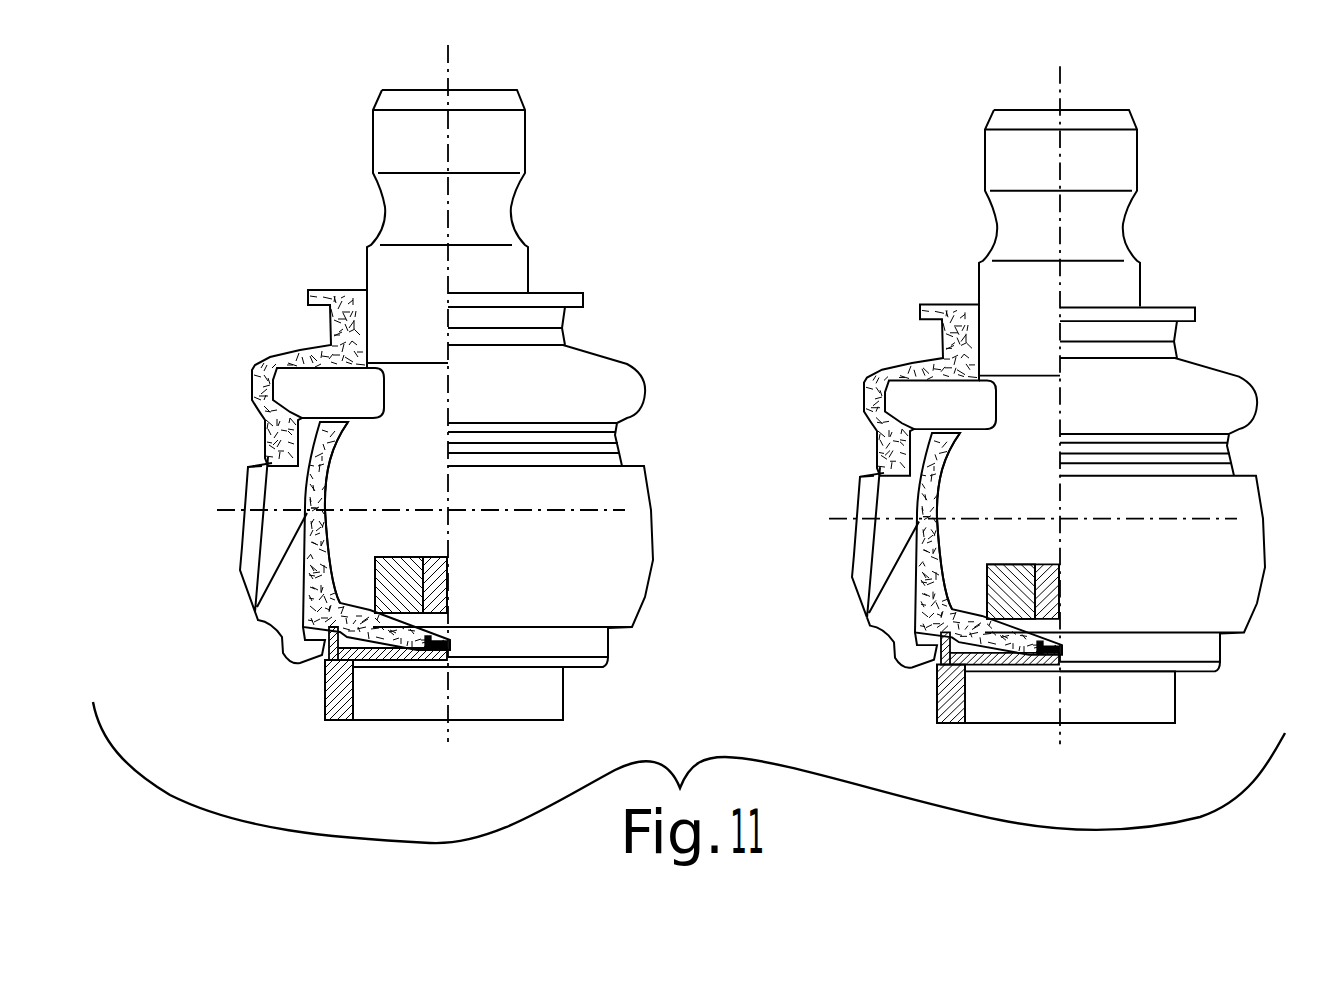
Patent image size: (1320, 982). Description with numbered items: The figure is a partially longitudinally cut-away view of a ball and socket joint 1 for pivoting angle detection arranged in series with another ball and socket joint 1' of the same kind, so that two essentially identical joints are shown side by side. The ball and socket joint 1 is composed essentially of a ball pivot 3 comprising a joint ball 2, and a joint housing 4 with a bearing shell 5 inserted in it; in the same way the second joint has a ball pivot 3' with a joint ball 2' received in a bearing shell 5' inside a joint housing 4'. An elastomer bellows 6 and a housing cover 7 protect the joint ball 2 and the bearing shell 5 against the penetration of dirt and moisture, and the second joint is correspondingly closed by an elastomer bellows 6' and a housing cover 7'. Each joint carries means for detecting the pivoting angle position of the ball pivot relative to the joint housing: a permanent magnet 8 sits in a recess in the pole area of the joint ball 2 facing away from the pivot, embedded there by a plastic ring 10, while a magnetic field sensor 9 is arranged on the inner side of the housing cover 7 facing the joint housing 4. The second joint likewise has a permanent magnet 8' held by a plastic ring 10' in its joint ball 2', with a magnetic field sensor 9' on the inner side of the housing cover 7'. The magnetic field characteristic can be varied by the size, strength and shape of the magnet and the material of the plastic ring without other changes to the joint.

The ball and socket joint 1 is at (417, 393).
The ball and socket joint 1' is at (1033, 403).
The joint ball 2 is at (265, 525).
The joint ball 2' is at (881, 533).
The ball pivot 3 is at (477, 226).
The ball pivot 3' is at (1091, 243).
The joint housing 4 is at (272, 515).
The joint housing 4' is at (890, 523).
The bearing shell 5 is at (312, 470).
The bearing shell 5' is at (928, 480).
The elastomer bellows 6 is at (535, 480).
The elastomer bellows 6' is at (1150, 489).
The housing cover 7 is at (475, 693).
The housing cover 7' is at (1089, 698).
The permanent magnet 8 is at (457, 581).
The permanent magnet 8' is at (1069, 584).
The magnetic field sensor 9 is at (414, 706).
The magnetic field sensor 9' is at (1027, 712).
The plastic ring 10 is at (399, 525).
The plastic ring 10' is at (1017, 533).